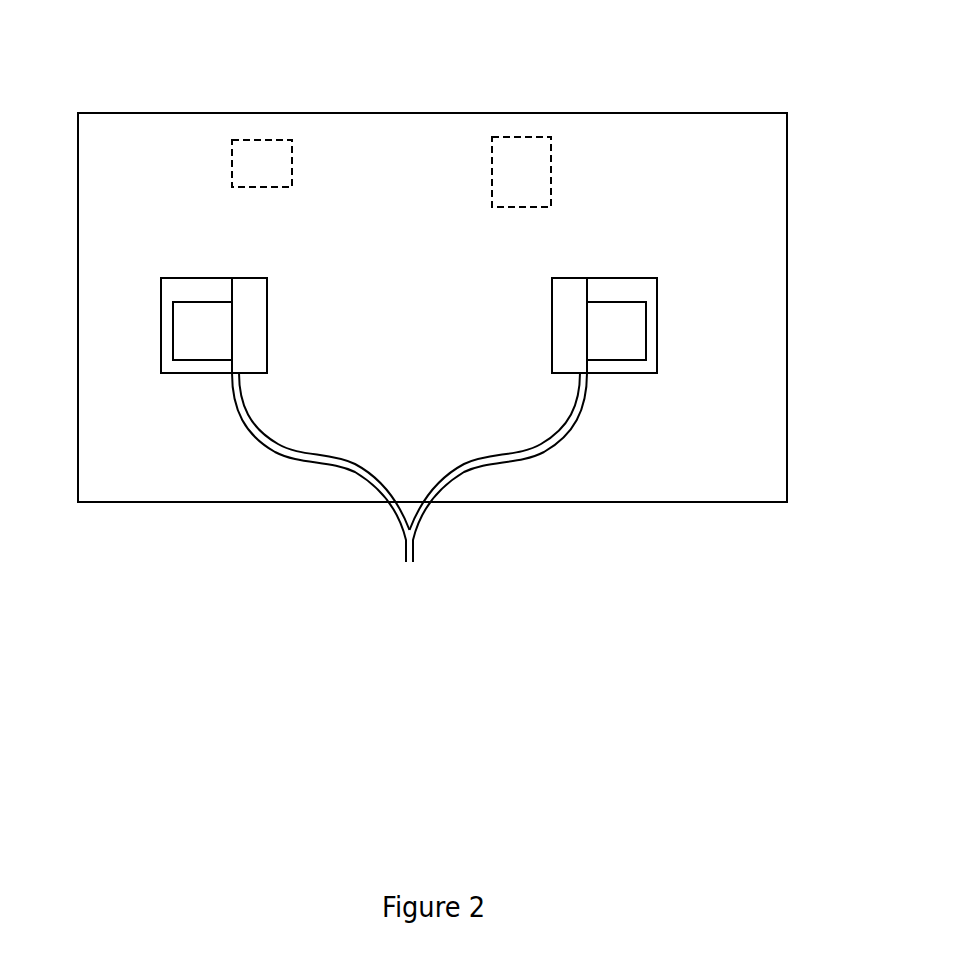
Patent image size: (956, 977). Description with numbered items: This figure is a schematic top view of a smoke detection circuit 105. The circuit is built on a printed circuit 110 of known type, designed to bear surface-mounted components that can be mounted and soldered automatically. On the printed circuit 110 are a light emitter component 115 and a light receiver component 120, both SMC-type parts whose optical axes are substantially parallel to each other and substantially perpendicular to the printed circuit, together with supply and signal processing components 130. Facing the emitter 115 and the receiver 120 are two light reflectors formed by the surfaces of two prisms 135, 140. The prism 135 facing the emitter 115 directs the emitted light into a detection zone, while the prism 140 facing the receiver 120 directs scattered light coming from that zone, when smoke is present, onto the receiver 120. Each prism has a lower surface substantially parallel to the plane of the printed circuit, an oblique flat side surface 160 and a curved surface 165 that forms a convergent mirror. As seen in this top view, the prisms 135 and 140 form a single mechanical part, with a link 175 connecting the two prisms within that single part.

The smoke detection circuit 105 is at (362, 643).
The printed circuit 110 is at (708, 488).
The light emitter component 115 is at (208, 347).
The light receiver component 120 is at (622, 348).
The supply and signal processing components 130 is at (255, 147).
The prism 135 is at (257, 362).
The prism 140 is at (645, 362).
The oblique flat side surface 160 is at (257, 313).
The curved surface 165 is at (185, 290).
The link 175 is at (422, 513).